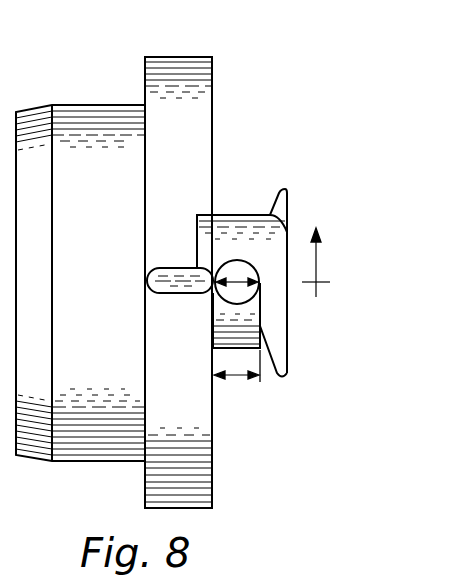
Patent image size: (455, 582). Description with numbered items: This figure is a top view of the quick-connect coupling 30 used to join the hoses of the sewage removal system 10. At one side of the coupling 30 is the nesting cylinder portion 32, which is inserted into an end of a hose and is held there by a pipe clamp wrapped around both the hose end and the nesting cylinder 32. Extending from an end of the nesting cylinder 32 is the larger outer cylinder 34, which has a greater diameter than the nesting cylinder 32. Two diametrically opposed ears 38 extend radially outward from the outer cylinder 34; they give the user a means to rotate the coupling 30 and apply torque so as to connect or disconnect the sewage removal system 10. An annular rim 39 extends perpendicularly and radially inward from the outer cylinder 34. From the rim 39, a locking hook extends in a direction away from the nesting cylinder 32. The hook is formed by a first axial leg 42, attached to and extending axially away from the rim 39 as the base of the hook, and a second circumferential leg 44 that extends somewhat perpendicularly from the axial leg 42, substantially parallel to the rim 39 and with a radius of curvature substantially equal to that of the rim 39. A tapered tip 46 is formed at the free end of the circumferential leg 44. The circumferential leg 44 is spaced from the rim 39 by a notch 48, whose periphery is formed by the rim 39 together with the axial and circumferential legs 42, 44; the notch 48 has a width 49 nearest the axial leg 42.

The sewage removal system 10 is at (316, 251).
The quick-connect coupling 30 is at (238, 85).
The nesting cylinder portion 32 is at (87, 104).
The outer cylinder 34 is at (177, 56).
The ear 38 is at (184, 290).
The annular rim 39 is at (213, 490).
The first axial leg 42 is at (261, 220).
The second circumferential leg 44 is at (282, 329).
The tapered tip 46 is at (284, 373).
The notch 48 is at (237, 380).
The width 49 is at (235, 270).